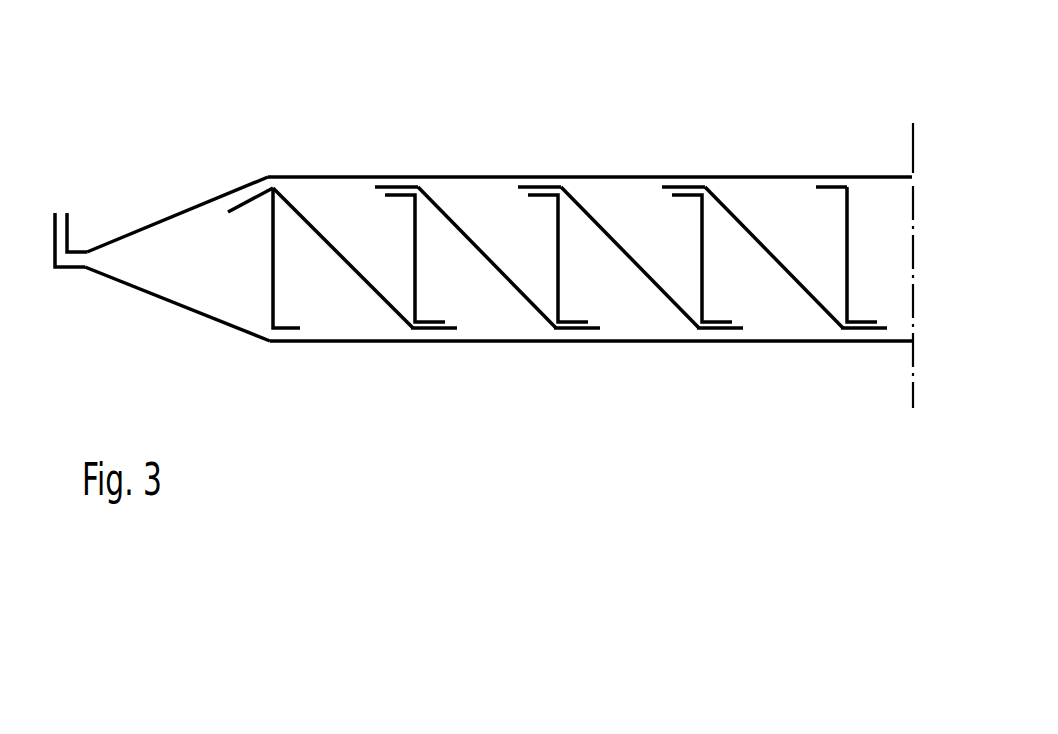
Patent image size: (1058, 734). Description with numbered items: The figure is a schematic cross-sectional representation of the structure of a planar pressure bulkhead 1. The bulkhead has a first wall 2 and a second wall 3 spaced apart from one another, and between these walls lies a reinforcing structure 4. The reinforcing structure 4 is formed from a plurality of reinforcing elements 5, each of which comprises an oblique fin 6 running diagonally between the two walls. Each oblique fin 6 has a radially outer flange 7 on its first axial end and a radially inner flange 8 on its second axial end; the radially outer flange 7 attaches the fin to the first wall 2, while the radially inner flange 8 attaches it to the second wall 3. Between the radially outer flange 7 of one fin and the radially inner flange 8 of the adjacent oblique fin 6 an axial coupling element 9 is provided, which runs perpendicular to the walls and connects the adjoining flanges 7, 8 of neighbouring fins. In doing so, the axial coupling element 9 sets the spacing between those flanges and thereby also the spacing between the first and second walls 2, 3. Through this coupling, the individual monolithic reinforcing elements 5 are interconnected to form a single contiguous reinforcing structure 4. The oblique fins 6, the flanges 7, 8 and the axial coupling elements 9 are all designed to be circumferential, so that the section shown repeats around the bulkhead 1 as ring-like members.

The planar pressure bulkhead 1 is at (834, 70).
The first wall 2 is at (318, 175).
The second wall 3 is at (340, 342).
The reinforcing structure 4 is at (896, 253).
The reinforcing element 5 is at (295, 374).
The oblique fin 6 is at (490, 262).
The radially outer flange 7 is at (395, 187).
The radially inner flange 8 is at (577, 330).
The axial coupling element 9 is at (417, 227).